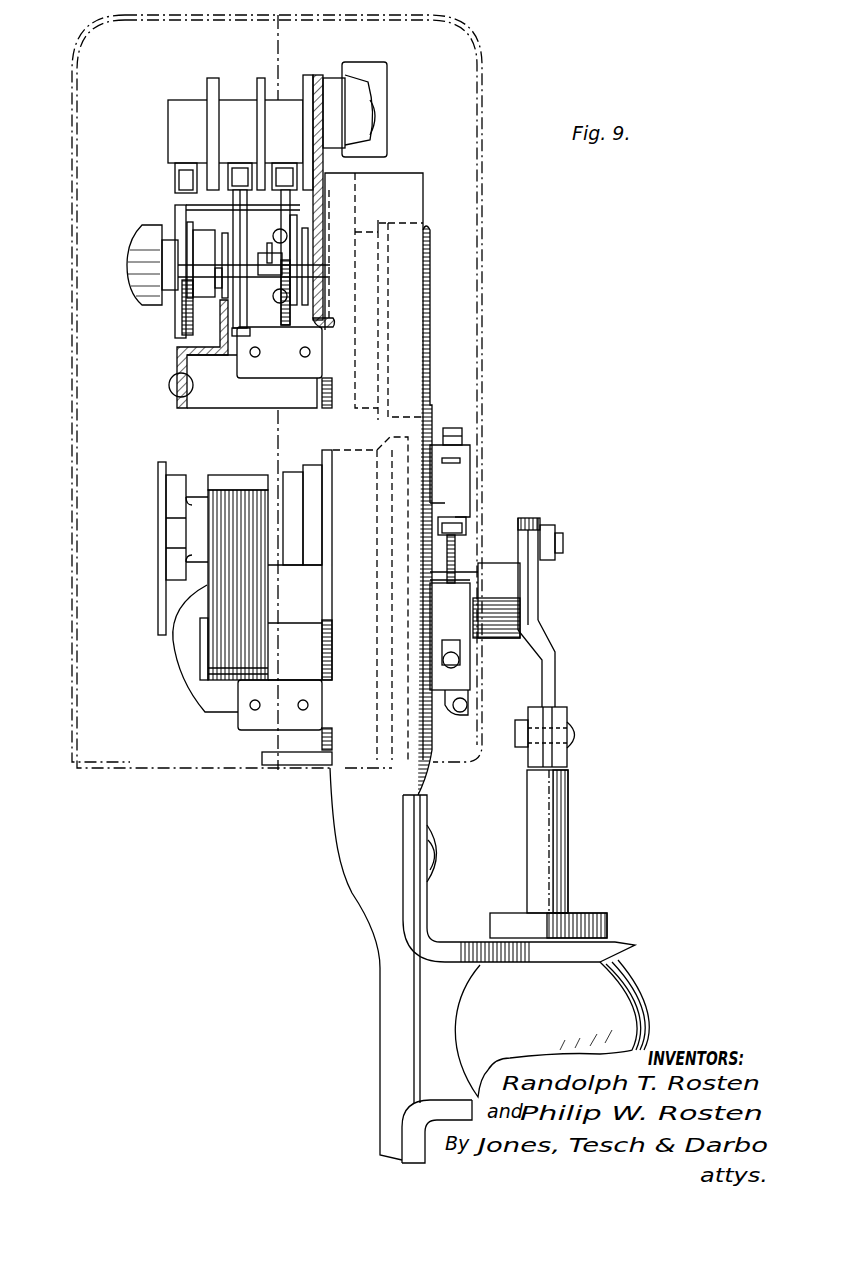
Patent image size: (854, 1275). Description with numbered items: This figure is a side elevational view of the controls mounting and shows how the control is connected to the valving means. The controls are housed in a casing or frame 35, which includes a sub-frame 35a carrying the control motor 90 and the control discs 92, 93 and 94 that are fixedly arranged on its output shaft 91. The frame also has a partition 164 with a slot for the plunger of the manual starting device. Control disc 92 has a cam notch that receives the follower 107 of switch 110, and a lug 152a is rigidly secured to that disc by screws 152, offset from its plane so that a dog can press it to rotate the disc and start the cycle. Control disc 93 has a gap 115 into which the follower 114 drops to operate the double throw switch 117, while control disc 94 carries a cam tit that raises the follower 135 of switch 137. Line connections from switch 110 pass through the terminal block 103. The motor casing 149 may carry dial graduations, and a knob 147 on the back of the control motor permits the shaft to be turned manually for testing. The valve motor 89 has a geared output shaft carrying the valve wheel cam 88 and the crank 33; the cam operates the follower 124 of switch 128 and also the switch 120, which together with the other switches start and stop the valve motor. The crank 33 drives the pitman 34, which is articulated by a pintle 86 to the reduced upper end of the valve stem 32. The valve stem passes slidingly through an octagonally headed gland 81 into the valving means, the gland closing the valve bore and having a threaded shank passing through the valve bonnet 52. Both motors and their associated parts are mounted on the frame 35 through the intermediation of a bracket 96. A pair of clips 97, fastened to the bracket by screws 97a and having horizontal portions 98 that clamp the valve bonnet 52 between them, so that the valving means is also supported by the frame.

The casing or frame 35 is at (482, 286).
The switch 137 is at (187, 100).
The double throw switch 117 is at (237, 100).
The switch 110 is at (288, 102).
The partition 164 is at (320, 78).
The terminal block 103 is at (373, 105).
The follower 135 is at (178, 192).
The follower 114 is at (240, 173).
The follower 107 is at (284, 175).
The control disc 93 is at (230, 213).
The gap 115 is at (177, 312).
The knob 147 is at (132, 292).
The output shaft 91 is at (217, 272).
The screws 152 is at (274, 236).
The control disc 94 is at (180, 324).
The motor casing 149 is at (177, 369).
The lug 152a is at (262, 292).
The sub-frame 35a is at (222, 408).
The control disc 92 is at (300, 207).
The control motor 90 is at (432, 240).
The valve motor 89 is at (202, 712).
The switch 128 is at (465, 452).
The follower 124 is at (458, 522).
The valve wheel cam 88 is at (454, 557).
The switch 120 is at (455, 675).
The crank 33 is at (517, 527).
The pitman 34 is at (550, 655).
The pintle 86 is at (582, 735).
The valve stem 32 is at (570, 842).
The gland 81 is at (590, 915).
The bracket 96 is at (380, 997).
The clips 97 is at (424, 905).
The screws 97a is at (438, 842).
The horizontal portions 98 is at (612, 942).
The valve bonnet 52 is at (635, 1002).